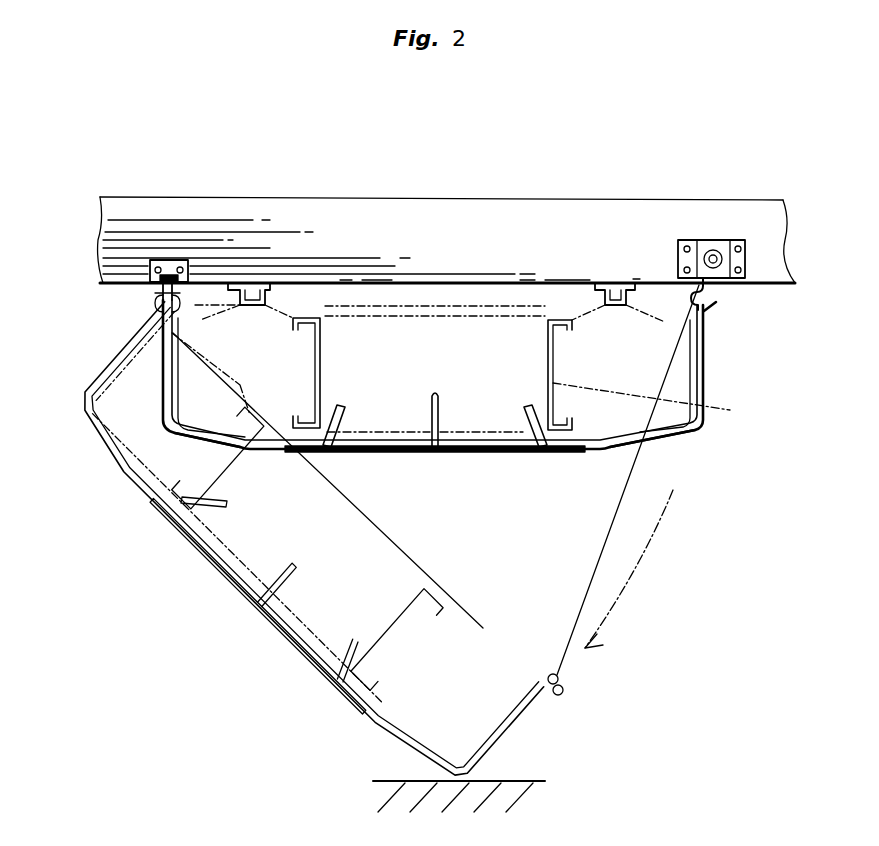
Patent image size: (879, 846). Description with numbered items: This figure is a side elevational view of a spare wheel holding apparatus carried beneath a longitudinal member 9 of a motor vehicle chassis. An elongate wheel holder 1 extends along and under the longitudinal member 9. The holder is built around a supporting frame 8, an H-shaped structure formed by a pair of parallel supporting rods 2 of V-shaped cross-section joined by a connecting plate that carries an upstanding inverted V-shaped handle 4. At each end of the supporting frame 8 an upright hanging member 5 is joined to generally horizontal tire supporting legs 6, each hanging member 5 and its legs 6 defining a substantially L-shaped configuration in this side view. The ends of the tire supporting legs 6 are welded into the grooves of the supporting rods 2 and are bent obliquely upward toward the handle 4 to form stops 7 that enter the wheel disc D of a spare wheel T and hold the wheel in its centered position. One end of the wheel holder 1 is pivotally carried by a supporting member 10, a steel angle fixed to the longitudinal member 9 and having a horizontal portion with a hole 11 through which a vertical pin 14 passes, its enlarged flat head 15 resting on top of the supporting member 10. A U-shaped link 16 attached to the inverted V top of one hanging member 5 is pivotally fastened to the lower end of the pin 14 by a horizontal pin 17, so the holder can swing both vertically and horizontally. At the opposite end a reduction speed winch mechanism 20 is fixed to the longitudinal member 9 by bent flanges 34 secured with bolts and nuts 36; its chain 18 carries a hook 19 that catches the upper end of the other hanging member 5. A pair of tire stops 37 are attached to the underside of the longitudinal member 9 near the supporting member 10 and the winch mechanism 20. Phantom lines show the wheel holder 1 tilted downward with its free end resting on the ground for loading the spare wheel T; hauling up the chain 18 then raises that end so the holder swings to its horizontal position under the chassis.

The wheel holder 1 is at (420, 537).
The supporting rods 2 is at (406, 453).
The handle 4 is at (440, 415).
The hanging members 5 is at (108, 415).
The tire supporting legs 6 is at (172, 440).
The stops 7 is at (341, 418).
The supporting frame 8 is at (505, 470).
The longitudinal member 9 is at (345, 197).
The supporting member 10 is at (160, 262).
The hole 11 is at (157, 290).
The pin 14 is at (158, 295).
The flat head 15 is at (170, 277).
The U-shaped link 16 is at (174, 300).
The pin 17 is at (165, 300).
The chain 18 is at (708, 283).
The hook 19 is at (712, 308).
The winch mechanism 20 is at (706, 240).
The flange 34 is at (745, 256).
The nuts 36 is at (740, 246).
The tire stops 37 is at (248, 287).
The spare wheel T is at (683, 393).
The wheel disc D is at (673, 438).